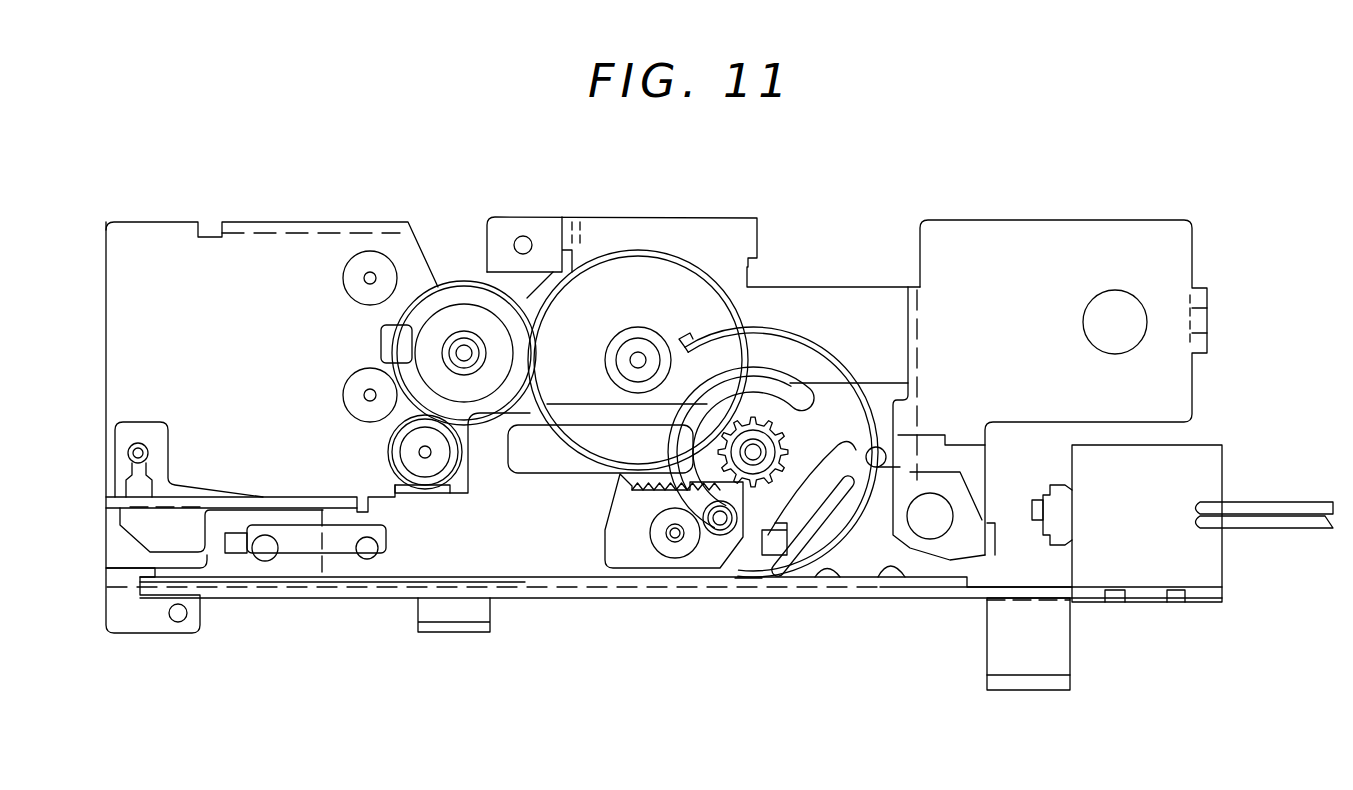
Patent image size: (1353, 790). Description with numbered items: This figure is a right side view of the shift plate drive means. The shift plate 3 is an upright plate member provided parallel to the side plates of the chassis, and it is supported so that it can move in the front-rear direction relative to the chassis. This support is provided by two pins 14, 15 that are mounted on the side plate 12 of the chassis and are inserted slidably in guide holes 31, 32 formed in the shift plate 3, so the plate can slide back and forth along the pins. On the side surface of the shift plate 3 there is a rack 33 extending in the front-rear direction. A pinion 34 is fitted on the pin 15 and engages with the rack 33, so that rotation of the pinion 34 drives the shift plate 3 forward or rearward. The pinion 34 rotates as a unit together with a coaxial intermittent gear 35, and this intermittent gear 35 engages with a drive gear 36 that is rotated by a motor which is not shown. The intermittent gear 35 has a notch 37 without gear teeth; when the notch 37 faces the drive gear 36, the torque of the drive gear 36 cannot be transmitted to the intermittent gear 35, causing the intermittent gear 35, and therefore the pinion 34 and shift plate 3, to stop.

The shift plate 3 is at (528, 545).
The side plate 12 is at (263, 248).
The pin 14 is at (367, 548).
The pin 15 is at (772, 462).
The guide hole 31 is at (303, 547).
The guide hole 32 is at (620, 493).
The rack 33 is at (658, 550).
The pinion 34 is at (790, 437).
The intermittent gear 35 is at (840, 530).
The drive gear 36 is at (693, 303).
The notch 37 is at (737, 413).